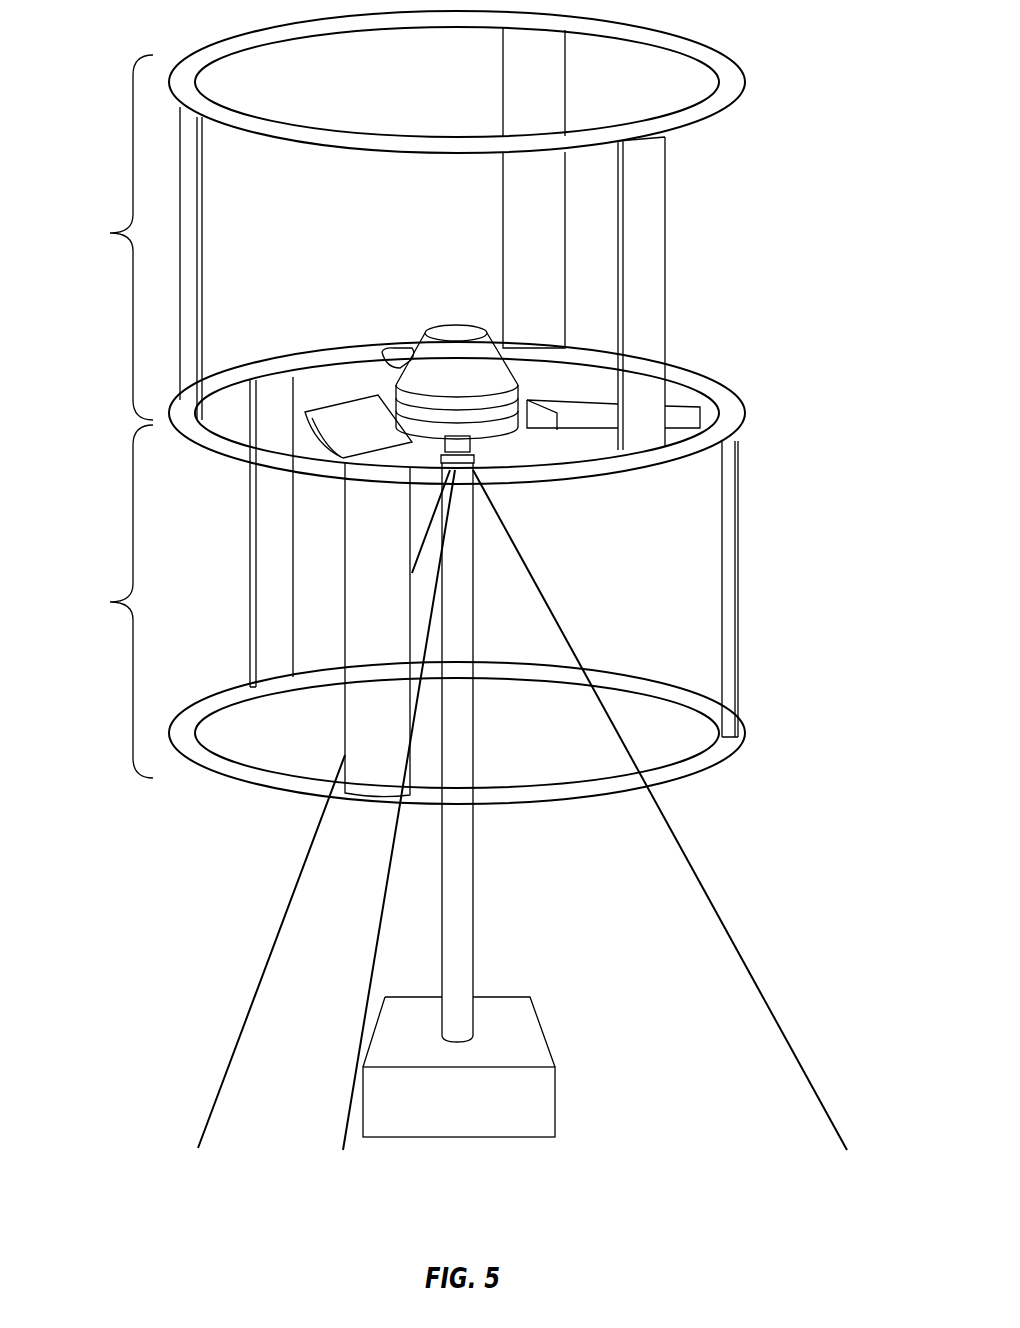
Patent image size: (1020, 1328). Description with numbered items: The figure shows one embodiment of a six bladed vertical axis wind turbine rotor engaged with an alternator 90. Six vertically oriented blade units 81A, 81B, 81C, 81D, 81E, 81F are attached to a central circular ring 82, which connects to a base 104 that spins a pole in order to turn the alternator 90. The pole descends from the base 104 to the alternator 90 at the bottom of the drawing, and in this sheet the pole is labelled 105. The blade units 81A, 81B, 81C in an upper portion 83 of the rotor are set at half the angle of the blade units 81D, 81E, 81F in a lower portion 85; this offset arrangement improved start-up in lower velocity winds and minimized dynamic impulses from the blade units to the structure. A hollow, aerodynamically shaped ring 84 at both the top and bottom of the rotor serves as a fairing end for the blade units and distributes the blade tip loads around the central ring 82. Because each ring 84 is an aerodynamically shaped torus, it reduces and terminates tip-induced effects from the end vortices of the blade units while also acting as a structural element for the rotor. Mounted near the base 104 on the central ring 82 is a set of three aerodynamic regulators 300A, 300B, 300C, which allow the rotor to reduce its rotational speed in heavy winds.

The aerodynamically shaped ring 84 is at (745, 80).
The central circular ring 82 is at (747, 412).
The upper portion 83 is at (113, 237).
The lower portion 85 is at (113, 601).
The blade unit 81A is at (667, 275).
The blade unit 81B is at (503, 228).
The blade unit 81C is at (203, 243).
The blade unit 81D is at (740, 577).
The blade unit 81E is at (345, 712).
The blade unit 81F is at (250, 580).
The aerodynamic regulator 300A is at (552, 432).
The aerodynamic regulator 300B is at (350, 398).
The aerodynamic regulator 300C is at (397, 347).
The base 104 is at (497, 445).
The shaft 105 is at (474, 905).
The alternator 90 is at (508, 997).